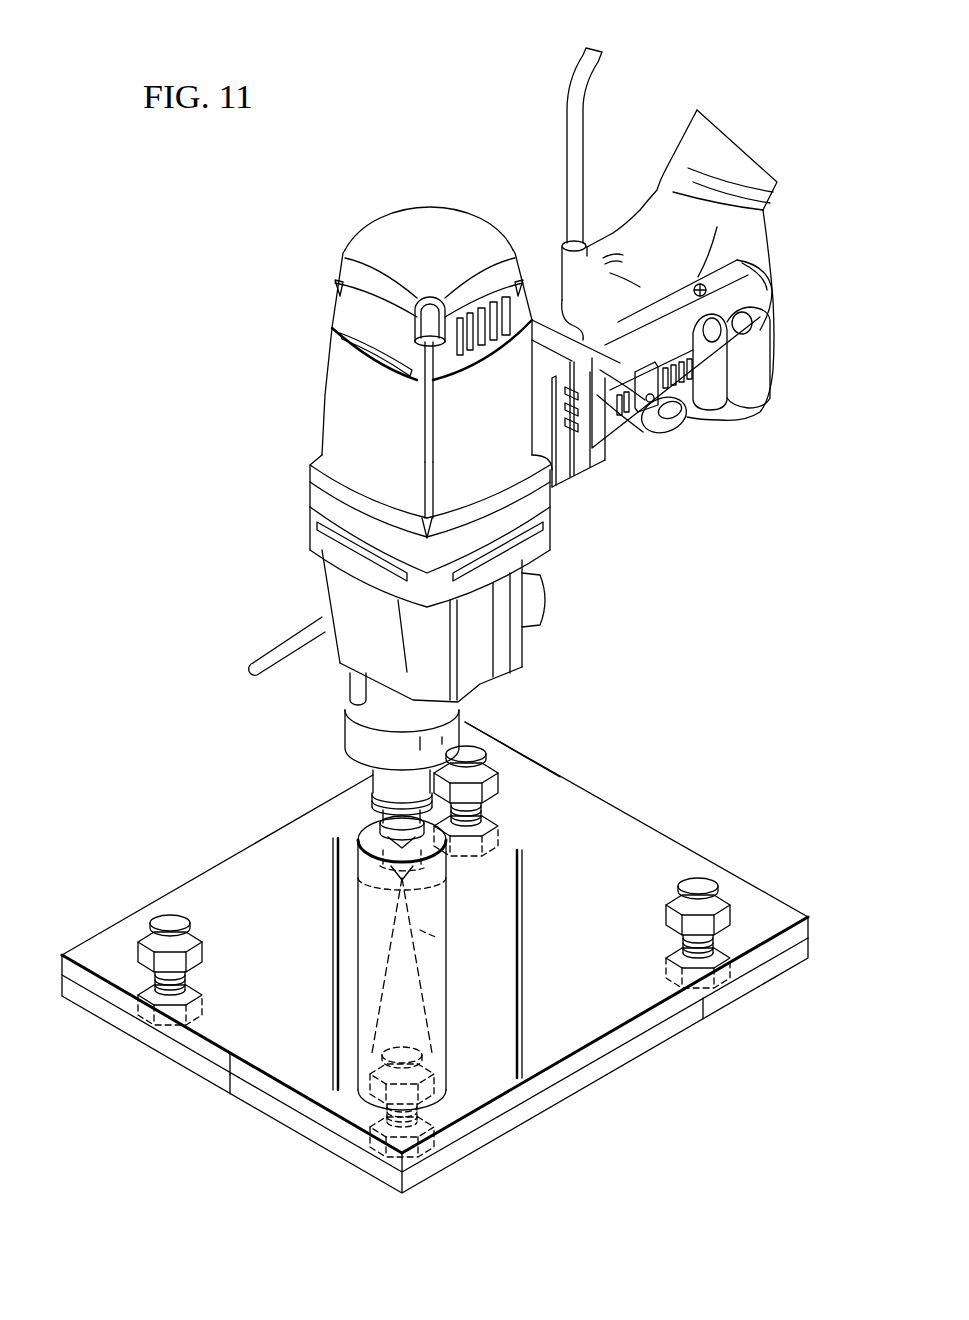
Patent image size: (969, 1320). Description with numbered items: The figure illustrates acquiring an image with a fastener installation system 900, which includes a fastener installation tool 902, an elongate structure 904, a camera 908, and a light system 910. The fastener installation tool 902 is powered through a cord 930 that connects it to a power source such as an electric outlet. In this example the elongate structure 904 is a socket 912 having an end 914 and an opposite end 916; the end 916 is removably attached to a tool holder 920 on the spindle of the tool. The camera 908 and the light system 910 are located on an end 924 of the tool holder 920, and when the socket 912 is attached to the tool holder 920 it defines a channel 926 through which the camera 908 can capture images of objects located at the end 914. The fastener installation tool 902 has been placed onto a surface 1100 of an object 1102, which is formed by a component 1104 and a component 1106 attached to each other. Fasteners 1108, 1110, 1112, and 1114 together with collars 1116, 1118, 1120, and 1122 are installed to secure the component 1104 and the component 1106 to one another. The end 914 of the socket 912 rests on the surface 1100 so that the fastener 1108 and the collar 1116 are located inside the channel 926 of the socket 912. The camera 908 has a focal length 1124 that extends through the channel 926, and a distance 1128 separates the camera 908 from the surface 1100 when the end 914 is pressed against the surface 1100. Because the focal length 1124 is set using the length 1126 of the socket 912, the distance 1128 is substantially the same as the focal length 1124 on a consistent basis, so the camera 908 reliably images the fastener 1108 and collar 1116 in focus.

The fastener installation system 900 is at (467, 182).
The fastener installation tool 902 is at (395, 228).
The elongate structure 904 is at (348, 995).
The camera 908 is at (410, 912).
The light system 910 is at (444, 882).
The socket 912 is at (357, 1020).
The end 914 is at (362, 1122).
The end 916 is at (360, 835).
The tool holder 920 is at (368, 814).
The end 924 is at (392, 877).
The channel 926 is at (412, 989).
The cord 930 is at (568, 100).
The surface 1100 is at (620, 822).
The object 1102 is at (560, 764).
The component 1104 is at (116, 940).
The component 1106 is at (113, 1020).
The fastener 1108 is at (432, 1150).
The fastener 1110 is at (205, 993).
The fastener 1112 is at (494, 826).
The fastener 1114 is at (668, 958).
The collar 1116 is at (436, 1085).
The collar 1118 is at (195, 926).
The collar 1120 is at (478, 758).
The collar 1122 is at (668, 906).
The focal length 1124 is at (436, 937).
The length 1126 is at (331, 925).
The distance 1128 is at (518, 926).